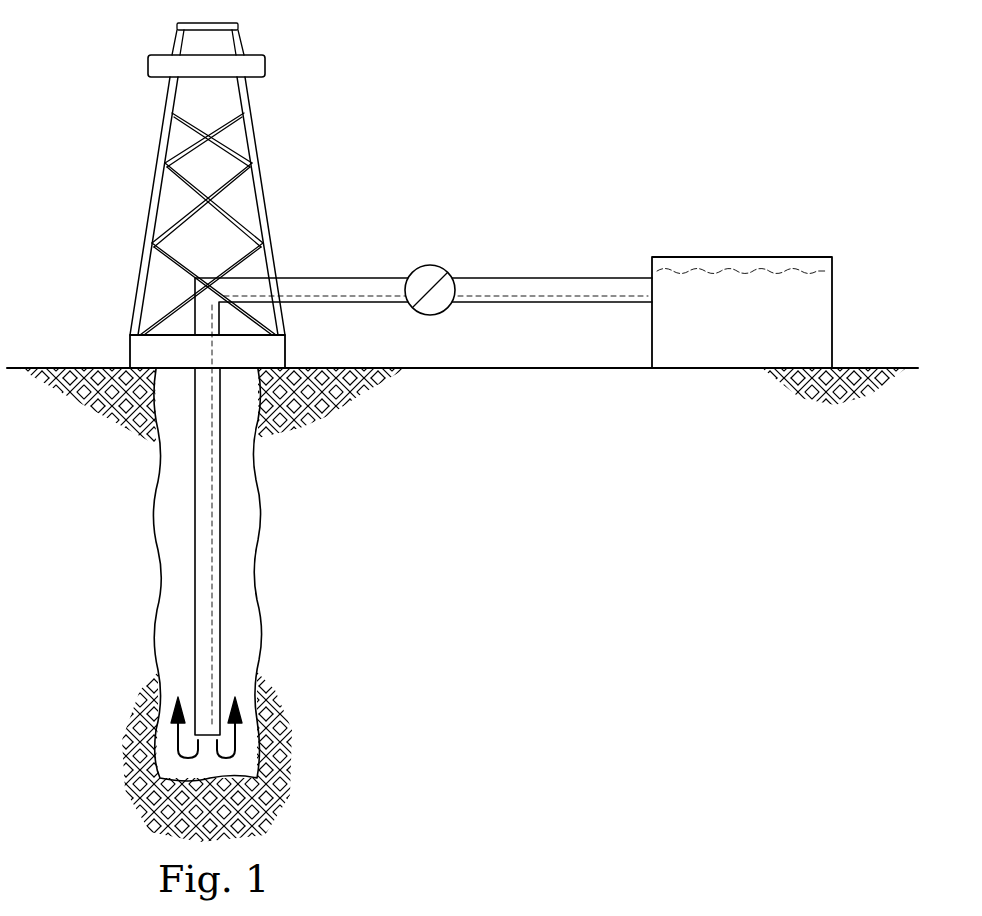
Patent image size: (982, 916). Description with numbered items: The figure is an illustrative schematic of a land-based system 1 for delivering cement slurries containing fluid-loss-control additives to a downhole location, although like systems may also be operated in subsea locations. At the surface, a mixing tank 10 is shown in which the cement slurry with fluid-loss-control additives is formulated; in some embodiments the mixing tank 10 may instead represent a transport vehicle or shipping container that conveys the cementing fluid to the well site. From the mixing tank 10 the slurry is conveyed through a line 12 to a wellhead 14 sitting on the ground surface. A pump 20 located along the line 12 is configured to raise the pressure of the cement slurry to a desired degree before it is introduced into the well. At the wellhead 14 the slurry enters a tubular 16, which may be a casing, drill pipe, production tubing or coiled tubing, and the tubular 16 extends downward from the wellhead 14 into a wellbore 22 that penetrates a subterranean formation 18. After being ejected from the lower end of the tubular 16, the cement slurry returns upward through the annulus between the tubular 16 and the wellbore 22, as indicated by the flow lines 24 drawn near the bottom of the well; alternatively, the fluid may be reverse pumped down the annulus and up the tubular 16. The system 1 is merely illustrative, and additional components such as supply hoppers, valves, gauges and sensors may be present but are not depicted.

The system 1 is at (692, 98).
The mixing tank 10 is at (744, 257).
The line 12 is at (341, 281).
The wellhead 14 is at (129, 352).
The tubular 16 is at (195, 550).
The subterranean formation 18 is at (533, 617).
The pump 20 is at (428, 267).
The wellbore 22 is at (258, 553).
The flow lines 24 is at (162, 738).